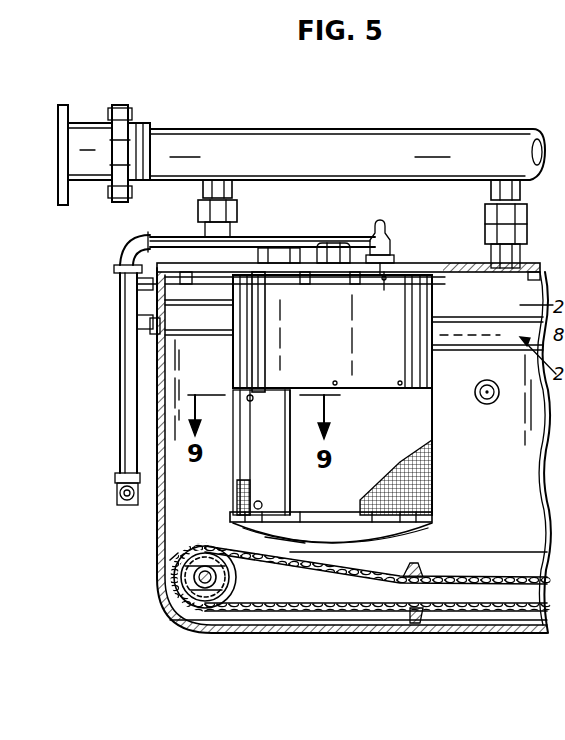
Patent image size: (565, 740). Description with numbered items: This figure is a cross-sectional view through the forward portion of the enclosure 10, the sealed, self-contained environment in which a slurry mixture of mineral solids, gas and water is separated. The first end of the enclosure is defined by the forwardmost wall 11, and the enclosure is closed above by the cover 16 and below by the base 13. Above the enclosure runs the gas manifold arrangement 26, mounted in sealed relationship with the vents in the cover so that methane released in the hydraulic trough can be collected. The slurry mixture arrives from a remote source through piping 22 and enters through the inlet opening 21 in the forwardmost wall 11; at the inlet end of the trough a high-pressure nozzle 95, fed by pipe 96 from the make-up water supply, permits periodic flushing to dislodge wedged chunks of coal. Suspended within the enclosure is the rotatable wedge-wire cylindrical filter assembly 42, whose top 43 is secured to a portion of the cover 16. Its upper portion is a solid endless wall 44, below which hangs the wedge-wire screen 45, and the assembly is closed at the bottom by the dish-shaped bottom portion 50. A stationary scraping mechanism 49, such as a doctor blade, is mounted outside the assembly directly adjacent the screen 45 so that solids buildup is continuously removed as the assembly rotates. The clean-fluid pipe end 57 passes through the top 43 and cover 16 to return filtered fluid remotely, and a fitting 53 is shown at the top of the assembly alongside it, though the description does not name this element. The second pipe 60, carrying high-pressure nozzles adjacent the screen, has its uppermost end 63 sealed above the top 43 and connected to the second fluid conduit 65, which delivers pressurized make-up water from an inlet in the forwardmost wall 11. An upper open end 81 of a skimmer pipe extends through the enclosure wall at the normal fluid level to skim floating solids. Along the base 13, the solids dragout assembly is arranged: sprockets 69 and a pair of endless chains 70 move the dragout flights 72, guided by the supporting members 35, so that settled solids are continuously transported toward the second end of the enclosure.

The enclosure 10 is at (416, 127).
The gas manifold arrangement 26 is at (331, 142).
The second fluid conduit 65 is at (302, 233).
The end of pipe 57 is at (277, 248).
The coupling 53 is at (336, 245).
The second pipe 60 is at (393, 257).
The top of filter assembly 43 is at (416, 265).
The cover 16 is at (532, 275).
The uppermost end of second pipe 63 is at (392, 272).
The inlet opening 21 is at (130, 278).
The piping 22 is at (110, 298).
The pipe 96 is at (110, 322).
The high-pressure nozzle 95 is at (150, 326).
The solid endless wall 44 is at (413, 338).
The upper open end of pipe 81 is at (499, 395).
The filter assembly 42 is at (438, 448).
The wedge-wire screen 45 is at (410, 468).
The scraping mechanism 49 is at (290, 488).
The bottom portion 50 is at (410, 530).
The supporting members 35 is at (482, 552).
The forwardmost wall 11 is at (156, 533).
The dragout flights 72 is at (160, 563).
The sprockets 69 is at (183, 612).
The endless chains 70 is at (220, 598).
The base 13 is at (392, 630).